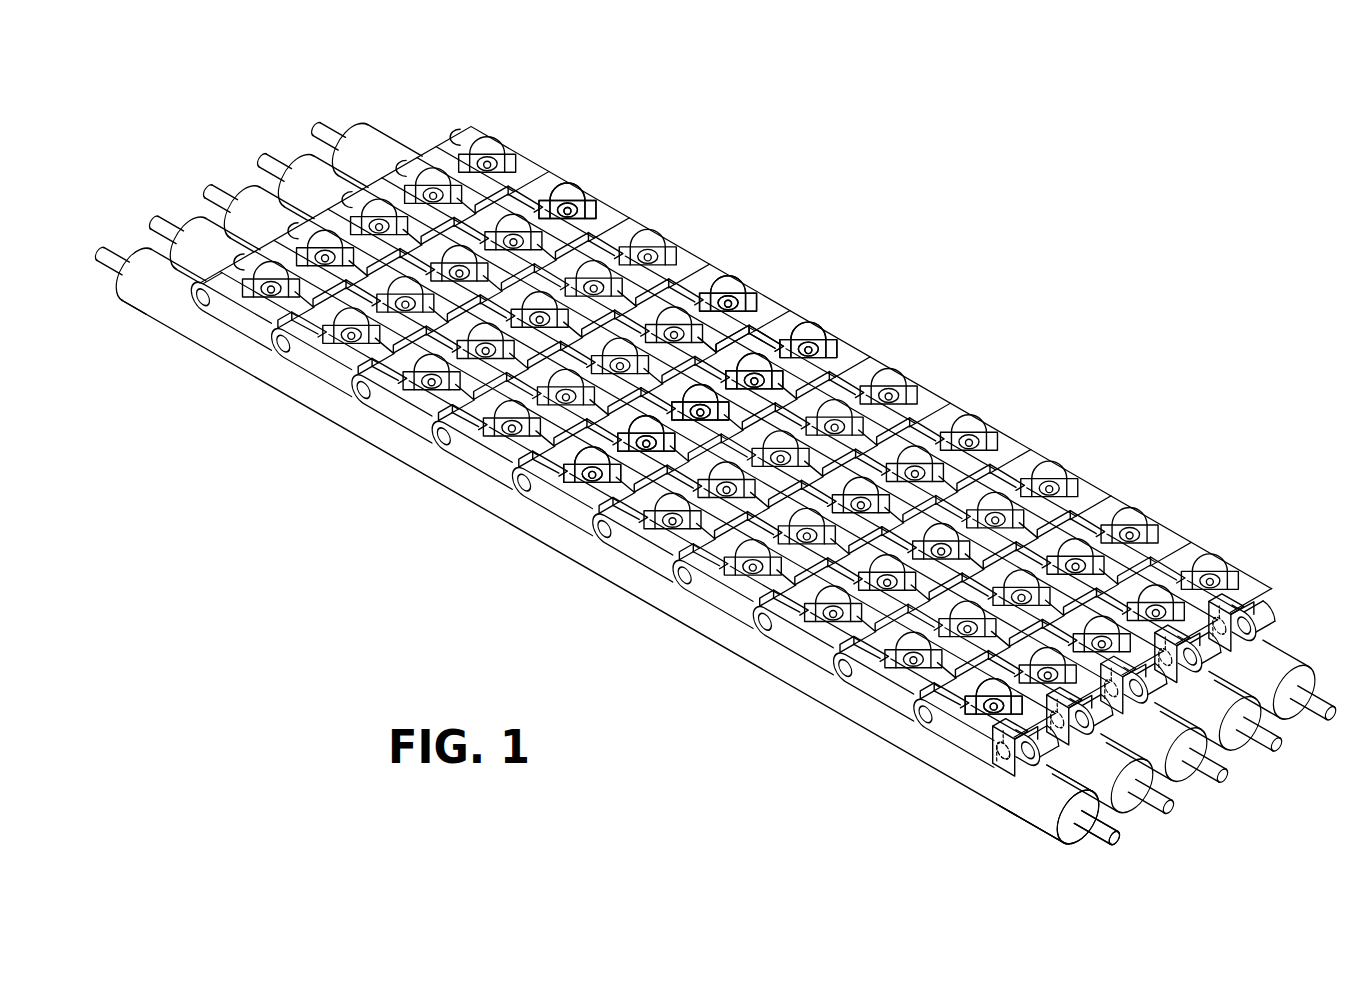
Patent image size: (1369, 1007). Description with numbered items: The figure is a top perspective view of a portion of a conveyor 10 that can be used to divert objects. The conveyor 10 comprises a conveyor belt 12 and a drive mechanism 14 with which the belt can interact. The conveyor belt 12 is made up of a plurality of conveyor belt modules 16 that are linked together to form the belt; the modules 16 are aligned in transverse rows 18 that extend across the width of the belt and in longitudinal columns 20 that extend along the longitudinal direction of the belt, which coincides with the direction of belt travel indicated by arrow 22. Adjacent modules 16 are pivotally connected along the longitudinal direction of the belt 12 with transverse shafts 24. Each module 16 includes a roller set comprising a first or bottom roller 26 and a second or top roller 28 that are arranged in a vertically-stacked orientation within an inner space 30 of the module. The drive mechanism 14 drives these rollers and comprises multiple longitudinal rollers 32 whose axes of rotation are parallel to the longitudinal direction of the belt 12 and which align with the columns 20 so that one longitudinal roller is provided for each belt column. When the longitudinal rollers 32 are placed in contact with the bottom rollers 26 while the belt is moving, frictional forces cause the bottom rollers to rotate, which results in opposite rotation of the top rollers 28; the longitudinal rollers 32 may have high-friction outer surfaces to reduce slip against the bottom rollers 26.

The conveyor 10 is at (715, 462).
The conveyor belt 12 is at (519, 107).
The drive mechanism 14 is at (1183, 813).
The conveyor belt module 16 is at (550, 183).
The transverse row 18 is at (1263, 503).
The longitudinal column 20 is at (258, 193).
The arrow 22 is at (735, 695).
The transverse shaft 24 is at (927, 718).
The bottom roller 26 is at (993, 763).
The top roller 28 is at (968, 714).
The inner space 30 is at (593, 196).
The longitudinal roller 32 is at (389, 150).